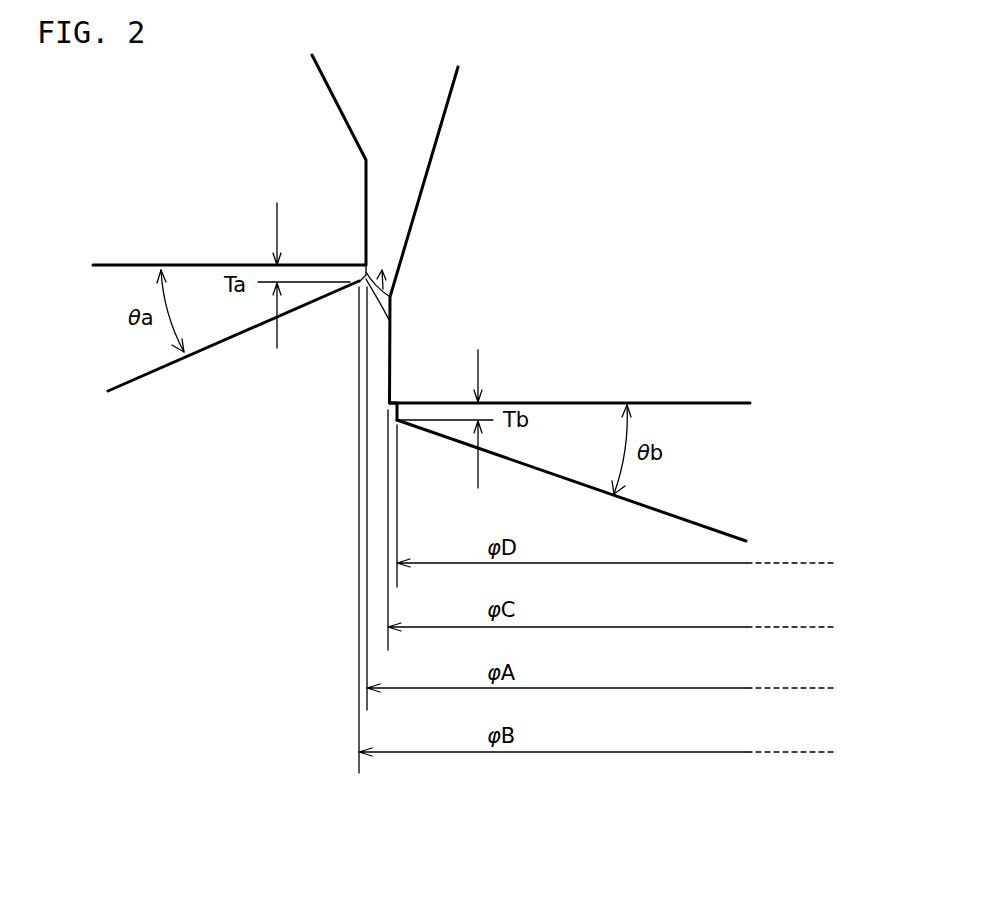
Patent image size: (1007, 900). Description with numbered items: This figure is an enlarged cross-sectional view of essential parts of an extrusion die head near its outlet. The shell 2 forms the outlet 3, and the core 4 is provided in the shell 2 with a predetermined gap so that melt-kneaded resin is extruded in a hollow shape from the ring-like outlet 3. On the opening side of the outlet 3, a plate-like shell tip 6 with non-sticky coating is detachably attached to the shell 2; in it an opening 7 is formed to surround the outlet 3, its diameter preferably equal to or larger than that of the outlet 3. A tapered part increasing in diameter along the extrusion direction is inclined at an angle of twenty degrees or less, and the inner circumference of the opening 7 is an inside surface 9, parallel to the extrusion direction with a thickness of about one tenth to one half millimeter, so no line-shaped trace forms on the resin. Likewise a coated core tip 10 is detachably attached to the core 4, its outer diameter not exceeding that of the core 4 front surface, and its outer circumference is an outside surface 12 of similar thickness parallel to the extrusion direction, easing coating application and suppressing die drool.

The shell 2 is at (170, 155).
The outlet 3 is at (383, 289).
The core 4 is at (667, 333).
The shell tip 6 is at (137, 350).
The opening 7 is at (391, 322).
The inside surface 9 is at (391, 305).
The core tip 10 is at (705, 465).
The outside surface 12 is at (396, 410).